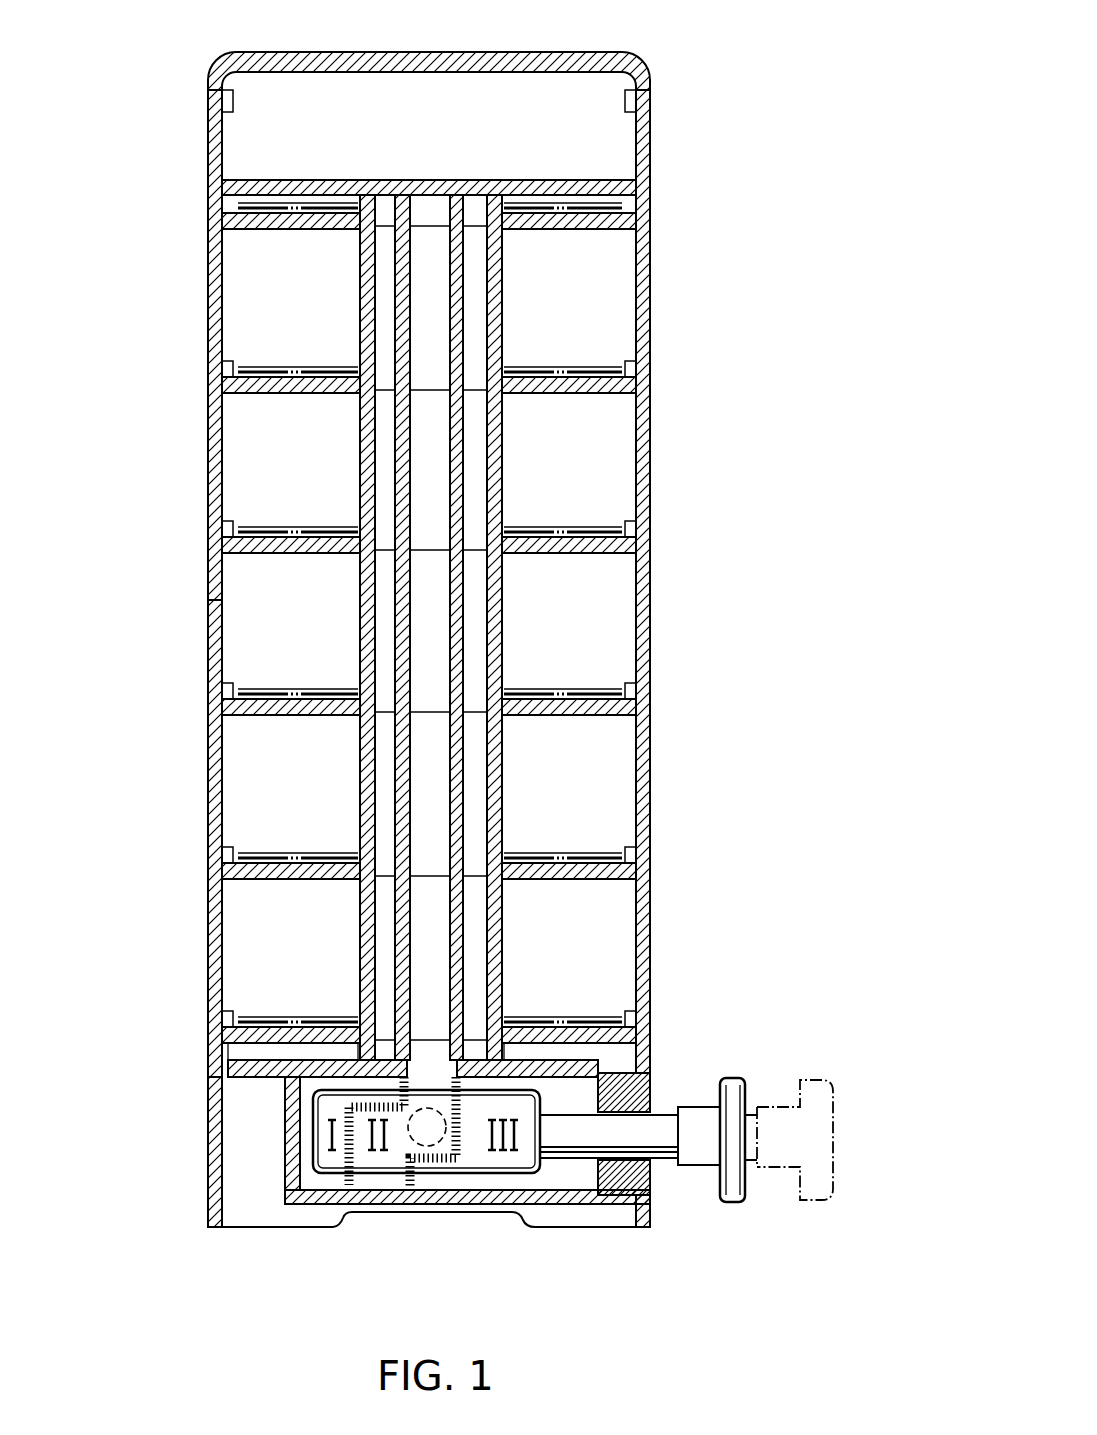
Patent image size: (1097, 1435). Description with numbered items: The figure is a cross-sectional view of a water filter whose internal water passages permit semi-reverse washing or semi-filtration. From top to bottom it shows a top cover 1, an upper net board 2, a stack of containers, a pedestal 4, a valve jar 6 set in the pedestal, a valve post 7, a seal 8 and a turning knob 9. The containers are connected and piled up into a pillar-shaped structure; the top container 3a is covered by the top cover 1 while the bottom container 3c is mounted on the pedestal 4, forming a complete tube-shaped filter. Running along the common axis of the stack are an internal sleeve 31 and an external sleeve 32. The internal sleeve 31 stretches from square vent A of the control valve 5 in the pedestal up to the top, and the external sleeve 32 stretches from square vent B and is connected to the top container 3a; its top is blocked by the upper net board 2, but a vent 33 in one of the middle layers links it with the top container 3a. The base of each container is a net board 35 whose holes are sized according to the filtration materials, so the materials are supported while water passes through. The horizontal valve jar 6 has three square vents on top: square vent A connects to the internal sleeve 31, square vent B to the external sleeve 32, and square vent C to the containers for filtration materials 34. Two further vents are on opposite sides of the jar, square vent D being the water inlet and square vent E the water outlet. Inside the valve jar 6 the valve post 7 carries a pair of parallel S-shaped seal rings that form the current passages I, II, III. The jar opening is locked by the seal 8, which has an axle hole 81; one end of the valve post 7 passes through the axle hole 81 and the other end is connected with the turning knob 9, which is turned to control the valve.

The top cover 1 is at (642, 64).
The upper net board 2 is at (541, 181).
The top container 3a is at (205, 319).
The bottom container 3c is at (206, 914).
The pedestal 4 is at (206, 1182).
The control valve 5 is at (394, 1207).
The valve jar 6 is at (563, 1213).
The valve post 7 is at (483, 1187).
The seal 8 is at (651, 1075).
The axle hole 81 is at (652, 1160).
The turning knob 9 is at (736, 1076).
The internal sleeve 31 is at (432, 260).
The external sleeve 32 is at (384, 302).
The vent 33 is at (495, 667).
The containers for filtration materials 34 is at (608, 318).
The net board 35 is at (262, 518).
The square vent A is at (430, 1050).
The square vent B is at (517, 1068).
The square vent C is at (300, 1066).
The square vent D is at (322, 1207).
The square vent E is at (380, 1181).
The current passage I is at (332, 1135).
The current passage II is at (378, 1135).
The current passage III is at (503, 1135).